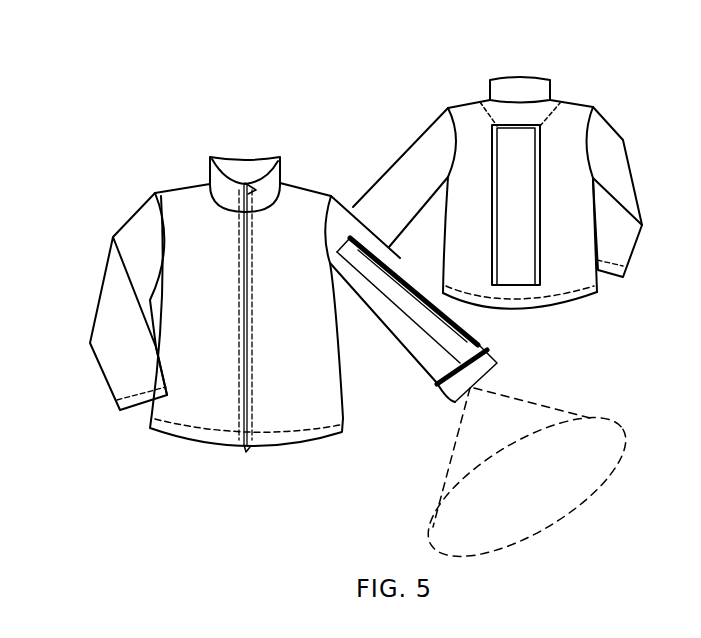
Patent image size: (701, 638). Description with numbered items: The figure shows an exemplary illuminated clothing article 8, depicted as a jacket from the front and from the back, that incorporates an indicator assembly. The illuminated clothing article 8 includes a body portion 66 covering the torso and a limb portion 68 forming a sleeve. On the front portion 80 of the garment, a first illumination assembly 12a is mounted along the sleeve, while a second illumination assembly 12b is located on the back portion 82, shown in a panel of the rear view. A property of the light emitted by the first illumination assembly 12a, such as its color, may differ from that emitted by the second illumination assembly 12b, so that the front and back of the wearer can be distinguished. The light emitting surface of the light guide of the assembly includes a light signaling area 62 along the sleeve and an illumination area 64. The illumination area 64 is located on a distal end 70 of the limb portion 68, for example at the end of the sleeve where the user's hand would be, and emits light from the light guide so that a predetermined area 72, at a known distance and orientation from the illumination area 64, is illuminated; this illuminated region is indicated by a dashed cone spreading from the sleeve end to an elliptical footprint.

The illuminated clothing article 8 is at (157, 76).
The front portion 80 is at (303, 198).
The limb portion 68 is at (143, 243).
The body portion 66 is at (273, 388).
The first illumination assembly 12a is at (404, 324).
The light signaling area 62 is at (440, 348).
The illumination area 64 is at (473, 363).
The distal end 70 is at (455, 402).
The predetermined area 72 is at (615, 442).
The second illumination assembly 12b is at (510, 147).
The back portion 82 is at (493, 172).